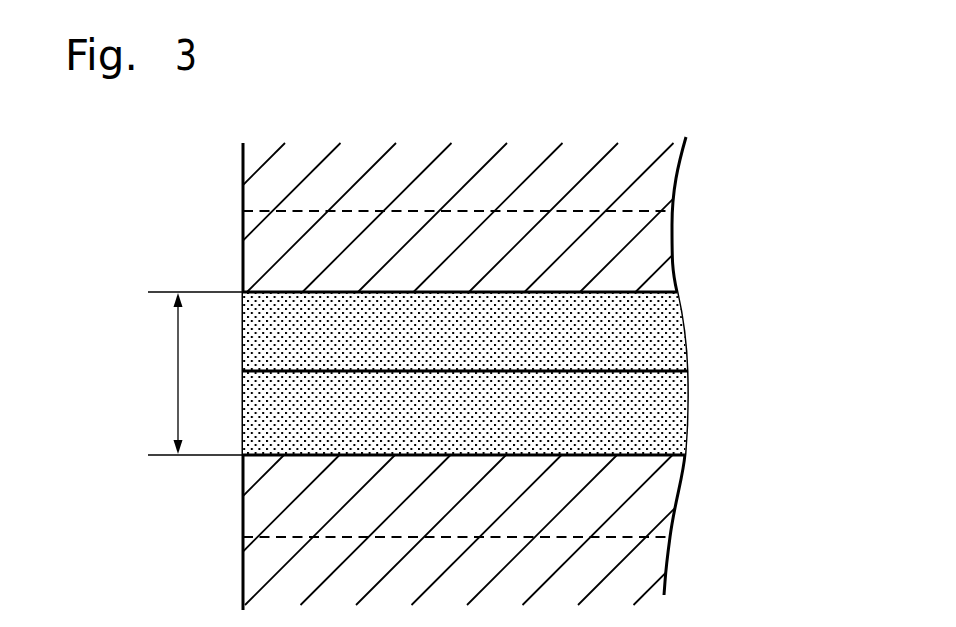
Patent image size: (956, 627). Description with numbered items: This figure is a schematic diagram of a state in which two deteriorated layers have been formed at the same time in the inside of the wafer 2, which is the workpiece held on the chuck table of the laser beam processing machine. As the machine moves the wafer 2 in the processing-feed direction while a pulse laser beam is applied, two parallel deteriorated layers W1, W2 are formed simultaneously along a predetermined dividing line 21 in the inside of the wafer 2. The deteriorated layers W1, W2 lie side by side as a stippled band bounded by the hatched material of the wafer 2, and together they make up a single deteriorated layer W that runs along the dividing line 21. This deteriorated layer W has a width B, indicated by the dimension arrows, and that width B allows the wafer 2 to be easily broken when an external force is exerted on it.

The wafer 2 is at (613, 175).
The dividing line 21 is at (288, 263).
The deteriorated layer W is at (535, 373).
The deteriorated layer W1 is at (660, 332).
The deteriorated layer W2 is at (665, 427).
The width B is at (195, 373).